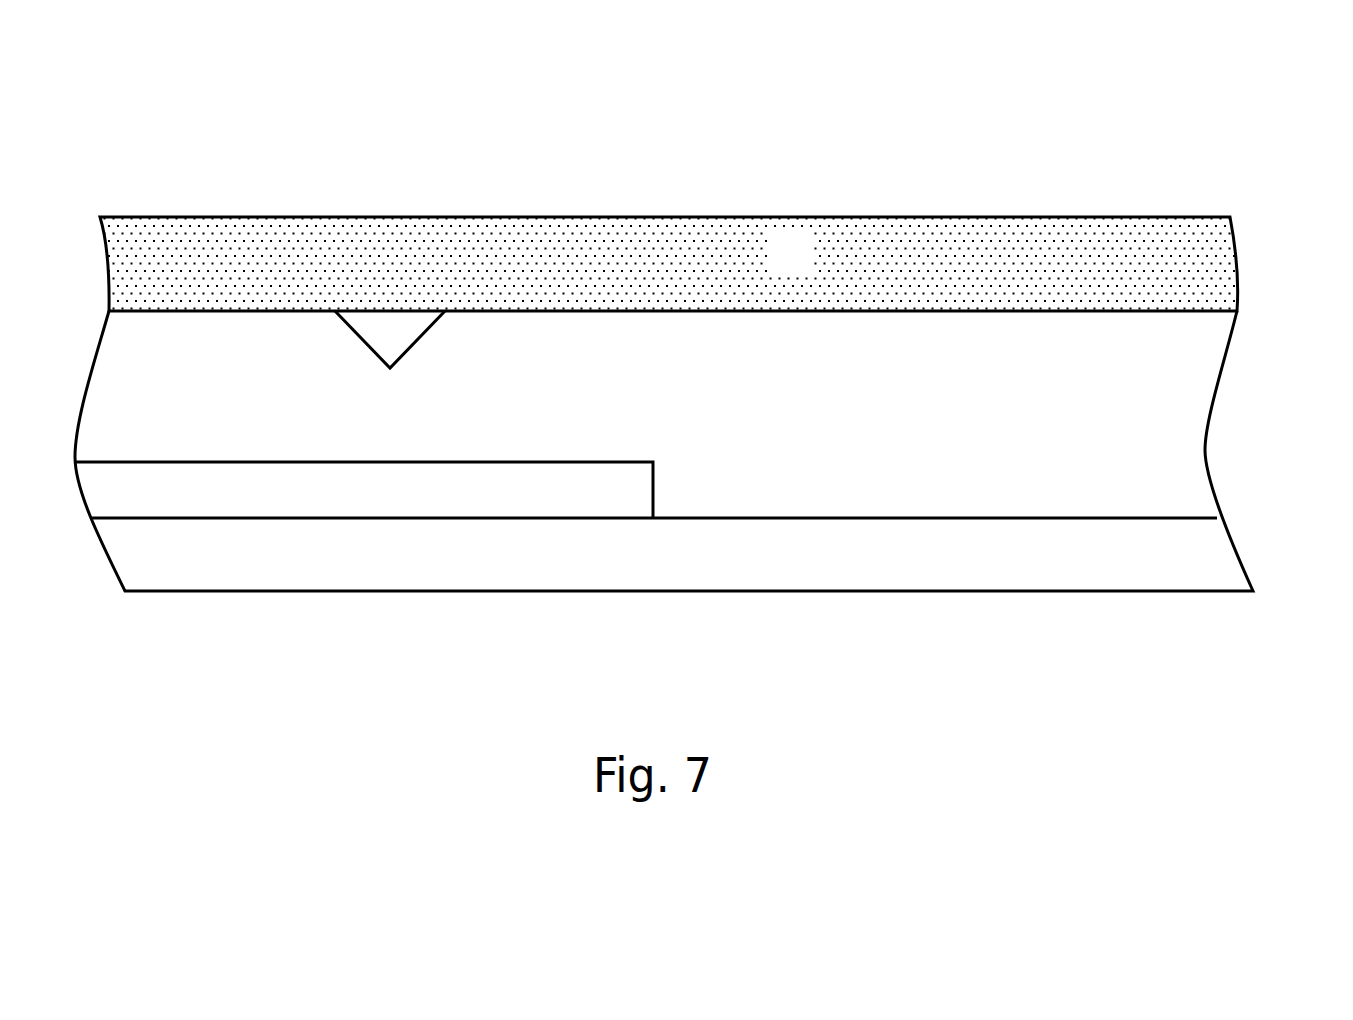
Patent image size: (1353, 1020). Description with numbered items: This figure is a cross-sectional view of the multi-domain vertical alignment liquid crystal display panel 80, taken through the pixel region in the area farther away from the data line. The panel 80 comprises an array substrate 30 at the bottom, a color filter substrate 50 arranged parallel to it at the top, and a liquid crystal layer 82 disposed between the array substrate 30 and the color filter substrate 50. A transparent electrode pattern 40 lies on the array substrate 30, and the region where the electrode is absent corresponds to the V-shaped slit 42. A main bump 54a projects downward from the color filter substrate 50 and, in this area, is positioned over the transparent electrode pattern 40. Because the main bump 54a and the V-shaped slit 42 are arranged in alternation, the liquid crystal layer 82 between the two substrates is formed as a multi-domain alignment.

The array substrate 30 is at (810, 568).
The transparent electrode pattern 40 is at (404, 510).
The V-shaped slit 42 is at (1140, 496).
The color filter substrate 50 is at (808, 268).
The main bump 54a is at (400, 330).
The multi-domain vertical alignment liquid crystal display panel 80 is at (1202, 132).
The liquid crystal layer 82 is at (1224, 365).